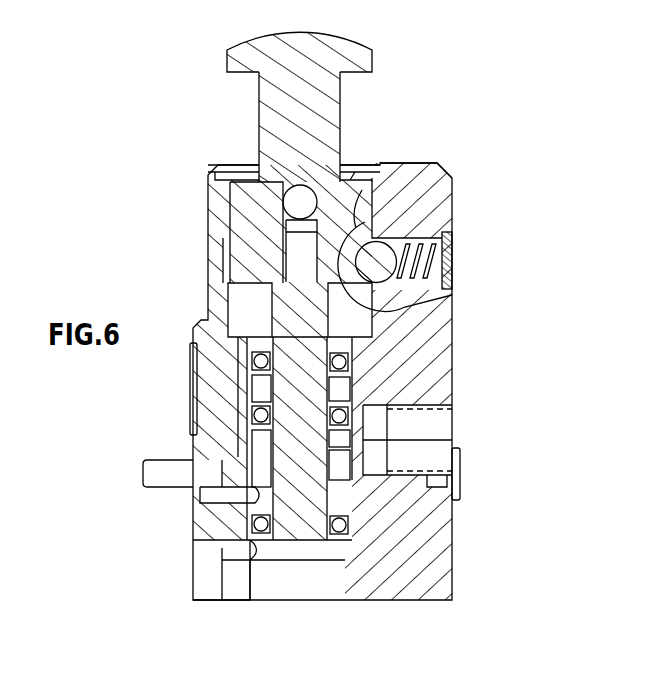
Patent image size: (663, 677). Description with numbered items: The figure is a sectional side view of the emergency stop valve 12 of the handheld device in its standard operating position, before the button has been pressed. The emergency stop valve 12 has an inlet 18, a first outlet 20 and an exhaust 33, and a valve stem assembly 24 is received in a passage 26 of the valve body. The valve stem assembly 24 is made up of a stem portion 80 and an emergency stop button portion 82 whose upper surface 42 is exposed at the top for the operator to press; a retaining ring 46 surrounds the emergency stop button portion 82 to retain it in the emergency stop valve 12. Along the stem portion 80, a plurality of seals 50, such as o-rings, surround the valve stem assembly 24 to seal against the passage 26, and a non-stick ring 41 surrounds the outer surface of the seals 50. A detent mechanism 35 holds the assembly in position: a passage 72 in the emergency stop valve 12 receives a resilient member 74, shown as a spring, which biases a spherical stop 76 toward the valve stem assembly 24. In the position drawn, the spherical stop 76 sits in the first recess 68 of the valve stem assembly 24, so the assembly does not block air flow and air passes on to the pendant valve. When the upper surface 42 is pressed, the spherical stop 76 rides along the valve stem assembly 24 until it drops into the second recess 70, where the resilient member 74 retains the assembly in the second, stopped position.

The emergency stop valve 12 is at (440, 87).
The inlet 18 is at (430, 423).
The first outlet 20 is at (208, 494).
The valve stem assembly 24 is at (310, 382).
The passage 26 is at (350, 403).
The exhaust 33 is at (203, 585).
The detent mechanism 35 is at (494, 244).
The non-stick ring 41 is at (350, 522).
The upper surface 42 is at (308, 33).
The retaining ring 46 is at (355, 178).
The seals 50 is at (340, 533).
The first recess 68 is at (444, 203).
The second recess 70 is at (432, 165).
The passage 72 is at (430, 297).
The resilient member 74 is at (414, 242).
The spherical stop 76 is at (430, 311).
The stem portion 80 is at (297, 312).
The emergency stop button portion 82 is at (272, 104).